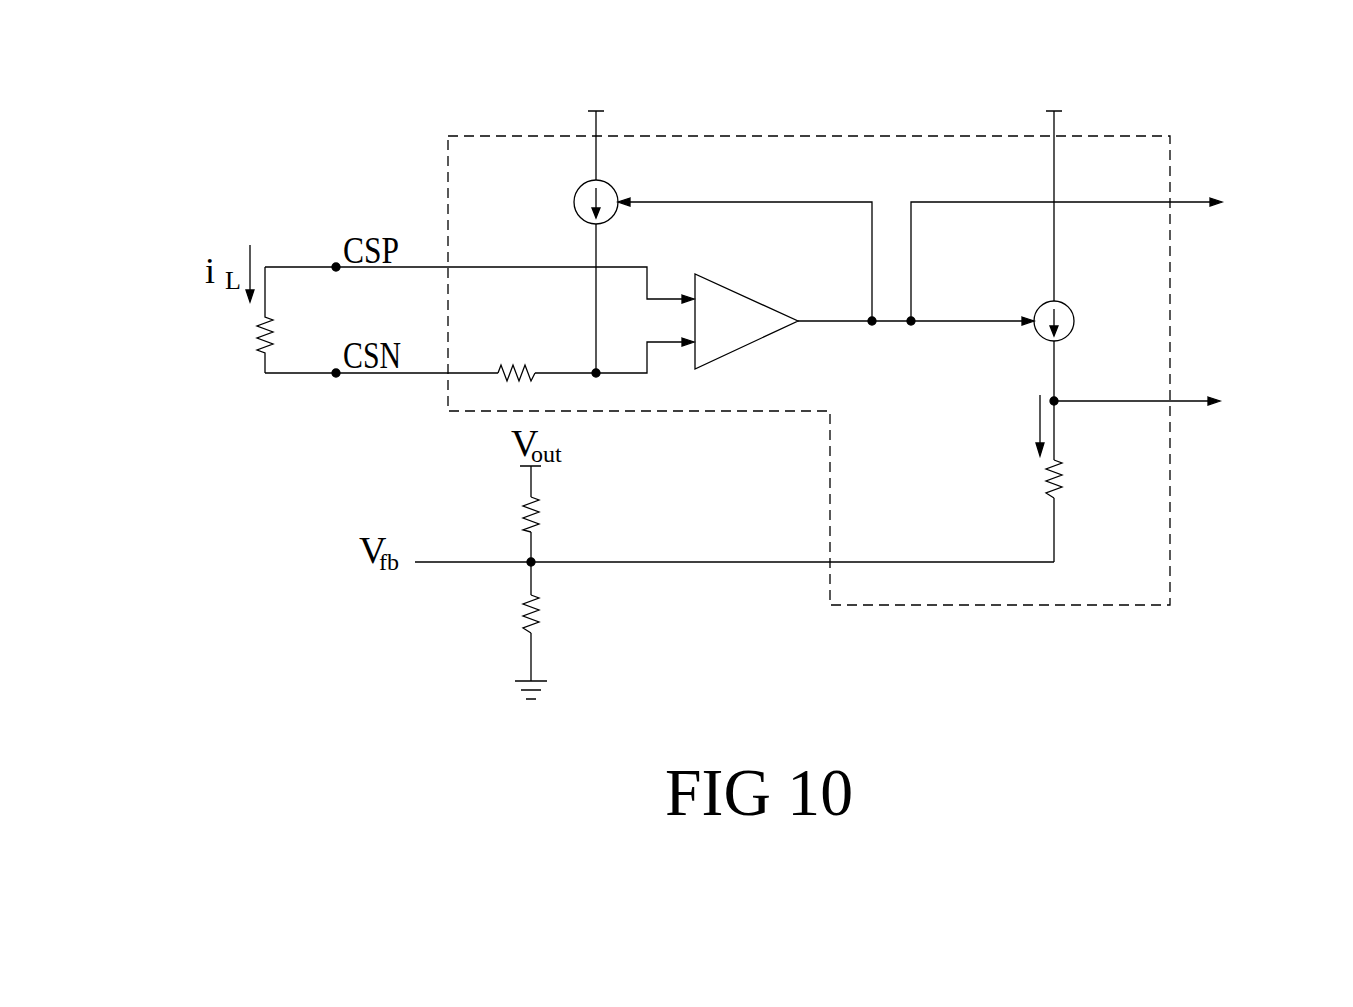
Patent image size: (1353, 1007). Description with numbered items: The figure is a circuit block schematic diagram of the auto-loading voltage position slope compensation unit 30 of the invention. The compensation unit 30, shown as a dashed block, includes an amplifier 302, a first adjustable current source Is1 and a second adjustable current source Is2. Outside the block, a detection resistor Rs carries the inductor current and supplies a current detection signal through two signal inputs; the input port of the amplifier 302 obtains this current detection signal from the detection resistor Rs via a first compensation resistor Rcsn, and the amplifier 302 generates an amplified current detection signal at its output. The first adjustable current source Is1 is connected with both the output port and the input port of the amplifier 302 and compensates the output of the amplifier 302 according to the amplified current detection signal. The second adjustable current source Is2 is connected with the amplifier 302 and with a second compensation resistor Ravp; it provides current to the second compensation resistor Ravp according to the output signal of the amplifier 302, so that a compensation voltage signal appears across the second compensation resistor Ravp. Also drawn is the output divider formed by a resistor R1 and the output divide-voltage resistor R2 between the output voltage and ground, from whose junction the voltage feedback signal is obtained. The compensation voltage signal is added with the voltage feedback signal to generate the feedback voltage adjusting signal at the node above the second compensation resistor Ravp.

The compensation unit 30 is at (874, 135).
The amplifier 302 is at (745, 294).
The detection resistor Rs is at (243, 320).
The first compensation resistor Rcsn is at (518, 353).
The feedback divider resistor R1 is at (551, 520).
The output divide-voltage resistor R2 is at (551, 619).
The second compensation resistor Ravp is at (1019, 485).
The first adjustable current source Is1 is at (617, 185).
The second adjustable current source Is2 is at (1080, 321).